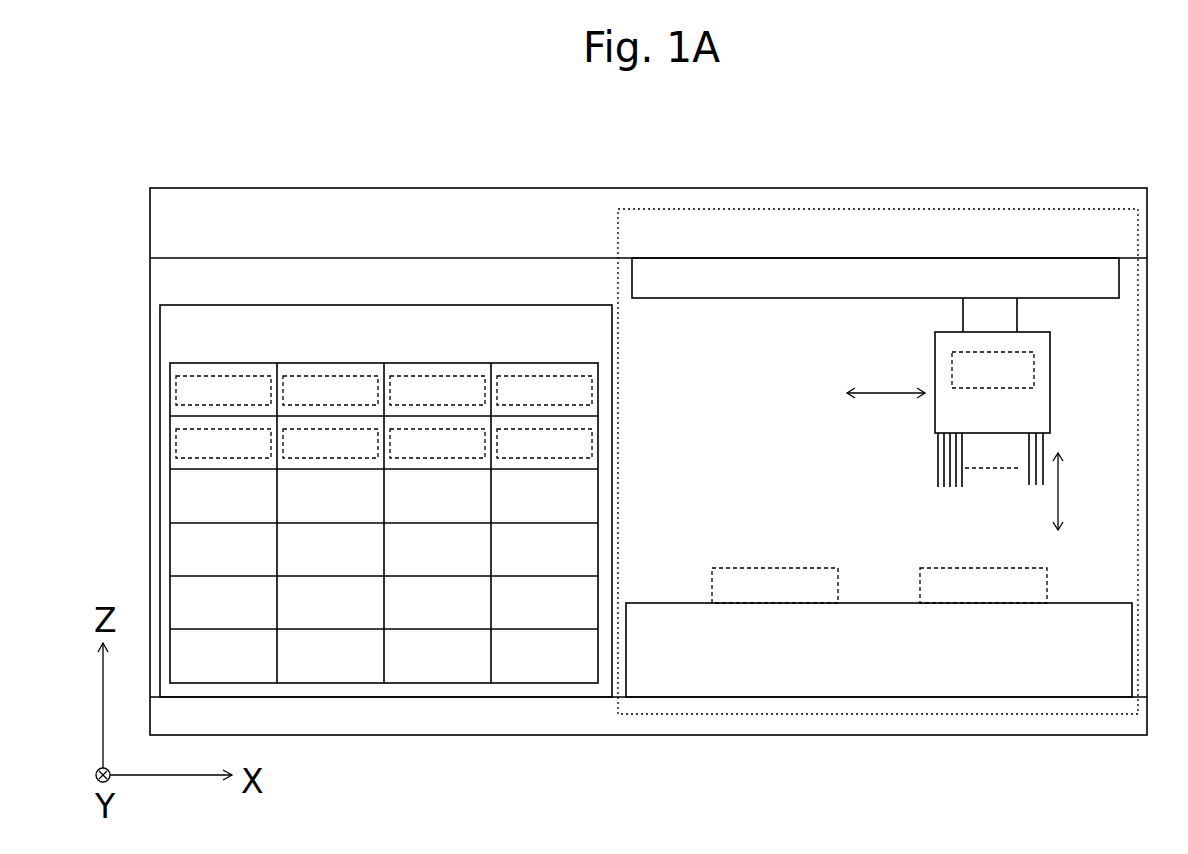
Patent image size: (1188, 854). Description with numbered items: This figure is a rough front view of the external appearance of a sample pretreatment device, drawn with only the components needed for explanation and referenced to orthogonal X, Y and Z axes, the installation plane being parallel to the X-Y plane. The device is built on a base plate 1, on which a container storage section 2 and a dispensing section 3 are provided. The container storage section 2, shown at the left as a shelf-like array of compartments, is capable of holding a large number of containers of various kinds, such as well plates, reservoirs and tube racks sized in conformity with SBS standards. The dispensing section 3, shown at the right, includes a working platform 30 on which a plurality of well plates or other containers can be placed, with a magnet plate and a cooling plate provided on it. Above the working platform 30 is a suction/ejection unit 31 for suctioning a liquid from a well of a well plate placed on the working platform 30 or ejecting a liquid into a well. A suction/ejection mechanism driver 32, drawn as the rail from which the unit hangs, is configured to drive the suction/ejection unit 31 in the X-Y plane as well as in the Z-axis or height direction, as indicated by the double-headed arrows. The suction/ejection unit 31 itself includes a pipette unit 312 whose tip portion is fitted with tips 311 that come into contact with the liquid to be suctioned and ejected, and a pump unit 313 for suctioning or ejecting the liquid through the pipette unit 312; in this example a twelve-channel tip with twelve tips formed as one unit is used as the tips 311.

The base plate 1 is at (793, 727).
The container storage section 2 is at (170, 348).
The dispensing section 3 is at (940, 210).
The working platform 30 is at (1087, 603).
The suction/ejection unit 31 is at (1062, 353).
The suction/ejection mechanism driver 32 is at (862, 298).
The tips 311 is at (940, 472).
The pipette unit 312 is at (938, 437).
The pump unit 313 is at (1038, 375).